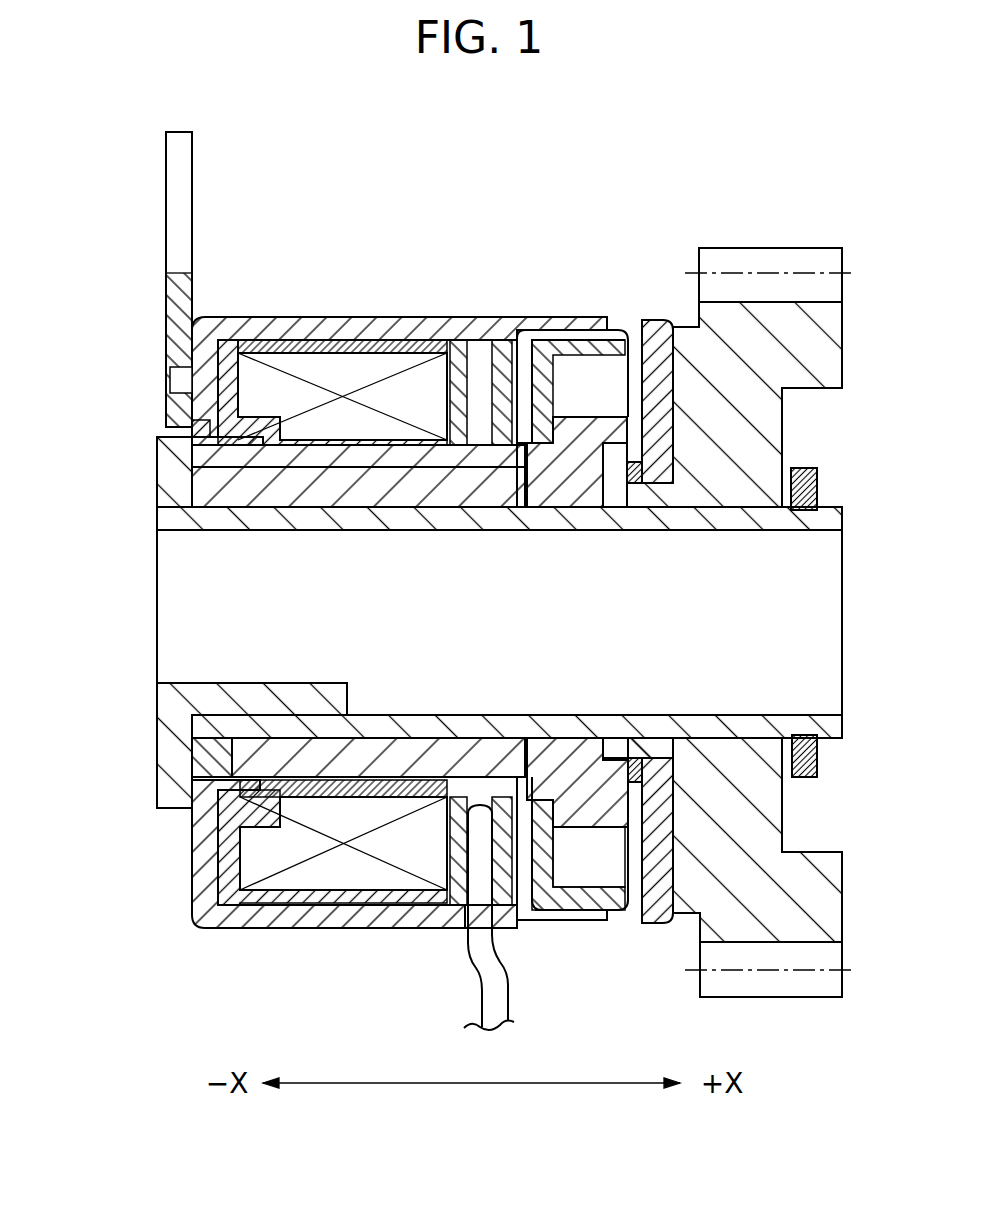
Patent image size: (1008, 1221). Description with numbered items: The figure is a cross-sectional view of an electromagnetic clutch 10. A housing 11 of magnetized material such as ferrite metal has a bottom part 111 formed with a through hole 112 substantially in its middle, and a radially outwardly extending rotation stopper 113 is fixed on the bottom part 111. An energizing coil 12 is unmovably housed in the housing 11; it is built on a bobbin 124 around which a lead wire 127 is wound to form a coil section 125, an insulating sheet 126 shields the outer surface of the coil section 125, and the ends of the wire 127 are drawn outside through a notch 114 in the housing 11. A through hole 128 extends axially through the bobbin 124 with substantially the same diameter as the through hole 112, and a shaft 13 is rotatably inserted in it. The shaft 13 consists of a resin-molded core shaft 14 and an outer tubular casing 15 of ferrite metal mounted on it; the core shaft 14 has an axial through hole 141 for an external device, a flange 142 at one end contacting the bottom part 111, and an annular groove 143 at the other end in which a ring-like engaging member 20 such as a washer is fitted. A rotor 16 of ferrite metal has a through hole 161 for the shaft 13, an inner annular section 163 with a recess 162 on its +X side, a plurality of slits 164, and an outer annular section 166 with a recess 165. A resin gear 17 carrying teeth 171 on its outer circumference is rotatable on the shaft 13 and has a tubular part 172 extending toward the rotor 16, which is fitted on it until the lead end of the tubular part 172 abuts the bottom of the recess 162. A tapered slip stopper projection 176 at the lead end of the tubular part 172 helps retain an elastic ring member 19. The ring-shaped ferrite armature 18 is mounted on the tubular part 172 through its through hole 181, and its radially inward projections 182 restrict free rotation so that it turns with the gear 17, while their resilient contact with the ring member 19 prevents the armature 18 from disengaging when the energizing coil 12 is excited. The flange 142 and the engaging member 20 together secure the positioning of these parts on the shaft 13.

The electromagnetic clutch 10 is at (496, 172).
The housing 11 is at (297, 323).
The energizing coil 12 is at (400, 333).
The shaft 13 is at (280, 588).
The core shaft 14 is at (300, 520).
The outer tubular casing 15 is at (362, 490).
The rotor 16 is at (562, 335).
The gear 17 is at (797, 342).
The armature 18 is at (648, 332).
The ring member 19 is at (637, 483).
The engaging member 20 is at (818, 480).
The bottom part 111 is at (200, 437).
The through hole 112 is at (213, 777).
The rotation stopper 113 is at (177, 183).
The notch 114 is at (462, 913).
The bobbin 124 is at (390, 460).
The coil section 125 is at (355, 375).
The insulating sheet 126 is at (267, 343).
The lead wire 127 is at (493, 978).
The through hole 128 is at (323, 768).
The through hole 141 is at (203, 682).
The flange 142 is at (180, 462).
The annular groove 143 is at (817, 757).
The through hole 161 is at (555, 507).
The recess 162 is at (605, 462).
The inner annular section 163 is at (547, 745).
The slits 164 is at (547, 867).
The recess 165 is at (600, 893).
The outer annular section 166 is at (557, 910).
The teeth 171 is at (770, 262).
The tubular part 172 is at (618, 748).
The slip stopper projection 176 is at (612, 452).
The through hole 181 is at (673, 477).
The projections 182 is at (667, 763).